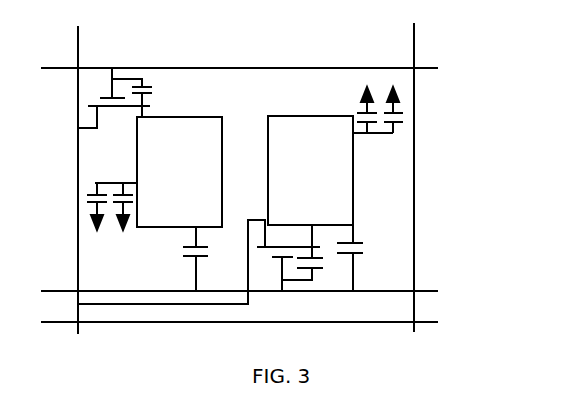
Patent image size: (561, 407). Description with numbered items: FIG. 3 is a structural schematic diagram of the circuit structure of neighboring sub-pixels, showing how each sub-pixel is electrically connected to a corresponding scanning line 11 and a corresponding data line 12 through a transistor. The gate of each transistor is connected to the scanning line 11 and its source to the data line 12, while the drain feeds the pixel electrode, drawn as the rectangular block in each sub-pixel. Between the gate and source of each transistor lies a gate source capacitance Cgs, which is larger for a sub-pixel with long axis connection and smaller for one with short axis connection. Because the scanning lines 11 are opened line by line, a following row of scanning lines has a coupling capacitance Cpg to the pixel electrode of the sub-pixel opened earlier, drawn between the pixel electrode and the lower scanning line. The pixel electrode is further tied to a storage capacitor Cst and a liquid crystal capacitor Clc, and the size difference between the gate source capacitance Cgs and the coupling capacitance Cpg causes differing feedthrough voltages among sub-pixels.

The scanning line 11 is at (427, 68).
The data line 12 is at (414, 112).
The gate source capacitance Cgs is at (229, 183).
The coupling capacitance Cpg is at (273, 258).
The storage capacitor Cst is at (368, 121).
The liquid crystal capacitor Clc is at (398, 121).